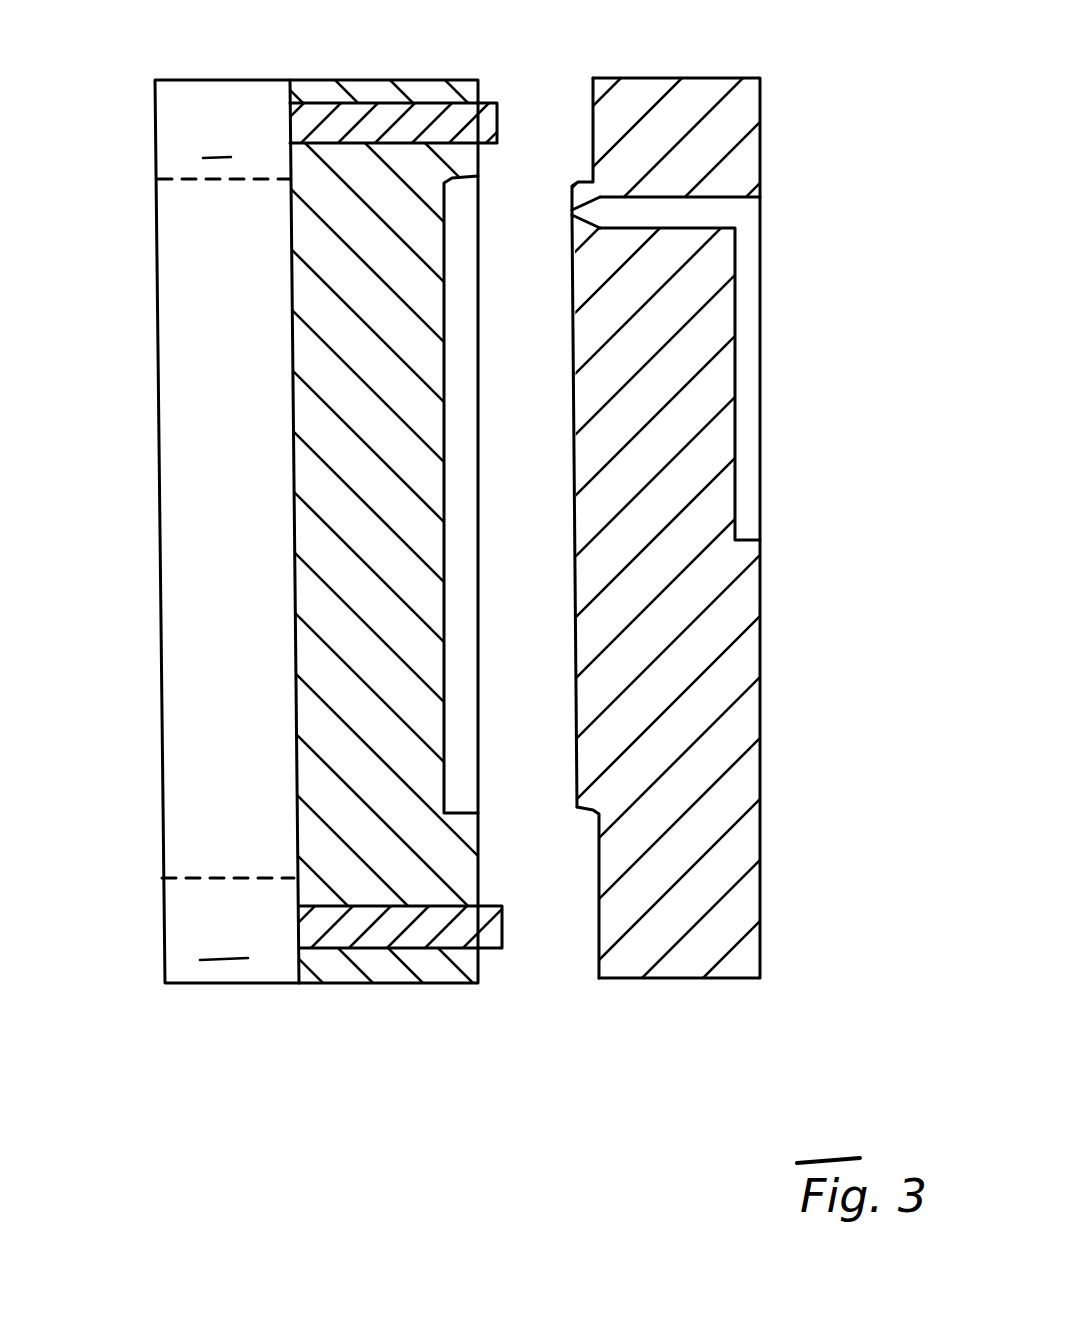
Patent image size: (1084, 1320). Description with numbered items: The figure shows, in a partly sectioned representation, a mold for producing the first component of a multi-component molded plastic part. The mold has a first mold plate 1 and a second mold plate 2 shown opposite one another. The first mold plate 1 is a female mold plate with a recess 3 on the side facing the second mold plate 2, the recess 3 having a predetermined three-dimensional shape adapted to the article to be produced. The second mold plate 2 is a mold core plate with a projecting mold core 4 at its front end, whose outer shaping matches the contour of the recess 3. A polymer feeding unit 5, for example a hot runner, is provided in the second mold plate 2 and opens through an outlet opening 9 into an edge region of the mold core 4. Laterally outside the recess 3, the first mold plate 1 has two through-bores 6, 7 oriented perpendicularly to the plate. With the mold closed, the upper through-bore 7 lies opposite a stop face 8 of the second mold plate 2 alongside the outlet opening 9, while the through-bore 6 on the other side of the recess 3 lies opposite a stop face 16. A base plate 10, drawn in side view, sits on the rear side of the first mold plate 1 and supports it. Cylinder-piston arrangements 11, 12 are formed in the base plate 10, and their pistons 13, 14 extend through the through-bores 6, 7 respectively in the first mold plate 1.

The first mold plate 1 is at (300, 585).
The second mold plate 2 is at (645, 90).
The recess 3 is at (450, 707).
The mold core 4 is at (578, 762).
The polymer feeding unit 5 is at (740, 212).
The through-bore 6 is at (433, 953).
The through-bore 7 is at (415, 100).
The stop face 8 is at (593, 137).
The outlet opening 9 is at (572, 212).
The base plate 10 is at (175, 752).
The cylinder-piston arrangement 11 is at (224, 939).
The cylinder-piston arrangement 12 is at (223, 136).
The piston 13 is at (353, 943).
The piston 14 is at (332, 105).
The stop face 16 is at (598, 930).